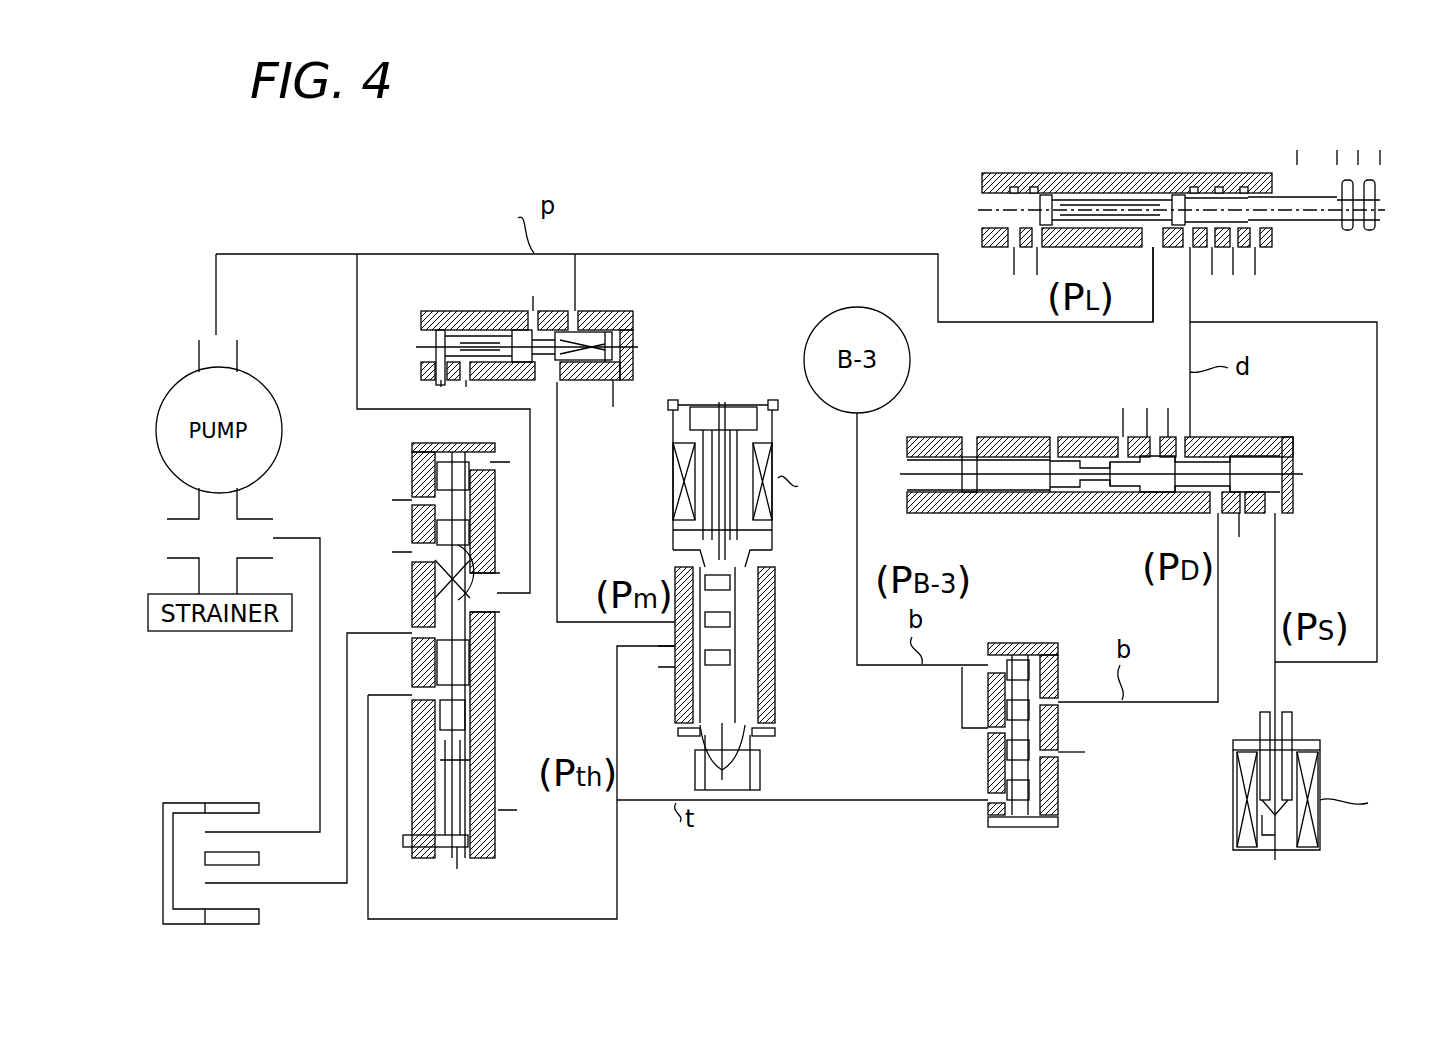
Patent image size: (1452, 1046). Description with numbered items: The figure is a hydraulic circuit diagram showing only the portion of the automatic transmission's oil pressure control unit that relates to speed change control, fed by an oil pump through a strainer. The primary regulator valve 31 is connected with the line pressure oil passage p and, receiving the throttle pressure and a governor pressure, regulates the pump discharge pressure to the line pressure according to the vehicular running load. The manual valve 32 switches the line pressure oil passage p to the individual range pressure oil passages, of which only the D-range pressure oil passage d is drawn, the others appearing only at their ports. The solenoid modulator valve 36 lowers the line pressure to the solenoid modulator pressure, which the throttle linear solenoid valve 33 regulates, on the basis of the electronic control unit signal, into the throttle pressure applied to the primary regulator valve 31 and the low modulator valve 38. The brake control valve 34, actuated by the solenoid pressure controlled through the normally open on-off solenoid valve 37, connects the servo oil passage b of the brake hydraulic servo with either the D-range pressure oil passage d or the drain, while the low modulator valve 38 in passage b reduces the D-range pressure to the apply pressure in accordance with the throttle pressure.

The primary regulator valve 31 is at (512, 847).
The manual valve 32 is at (960, 212).
The throttle linear solenoid valve 33 is at (738, 390).
The B-3 control valve 34 is at (1042, 519).
The solenoid modulator valve 36 is at (647, 315).
The solenoid valve 37 is at (1333, 727).
The low modulator valve 38 is at (1075, 822).